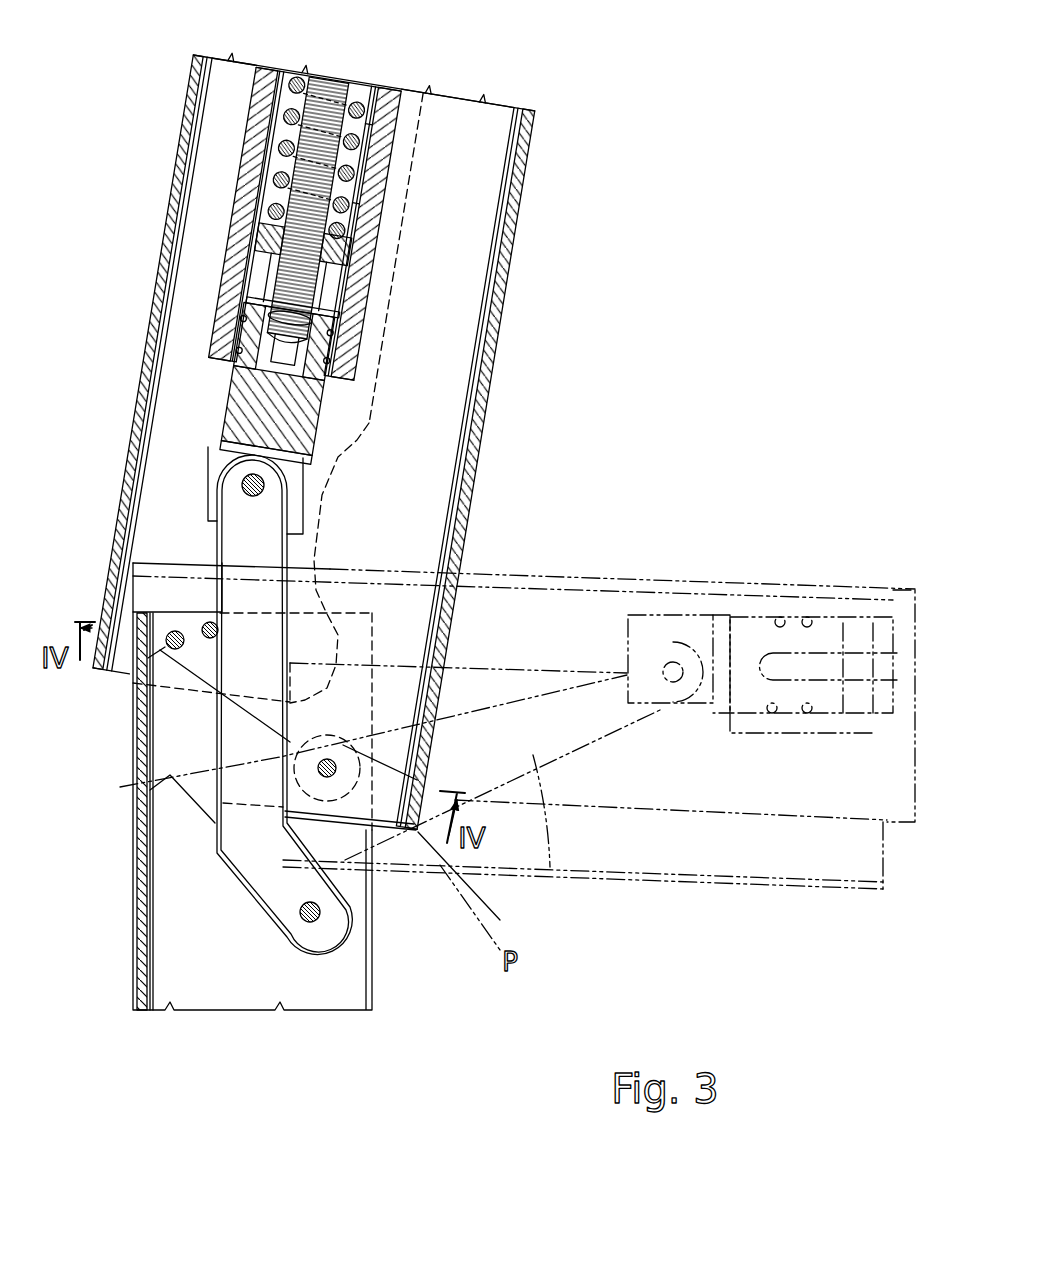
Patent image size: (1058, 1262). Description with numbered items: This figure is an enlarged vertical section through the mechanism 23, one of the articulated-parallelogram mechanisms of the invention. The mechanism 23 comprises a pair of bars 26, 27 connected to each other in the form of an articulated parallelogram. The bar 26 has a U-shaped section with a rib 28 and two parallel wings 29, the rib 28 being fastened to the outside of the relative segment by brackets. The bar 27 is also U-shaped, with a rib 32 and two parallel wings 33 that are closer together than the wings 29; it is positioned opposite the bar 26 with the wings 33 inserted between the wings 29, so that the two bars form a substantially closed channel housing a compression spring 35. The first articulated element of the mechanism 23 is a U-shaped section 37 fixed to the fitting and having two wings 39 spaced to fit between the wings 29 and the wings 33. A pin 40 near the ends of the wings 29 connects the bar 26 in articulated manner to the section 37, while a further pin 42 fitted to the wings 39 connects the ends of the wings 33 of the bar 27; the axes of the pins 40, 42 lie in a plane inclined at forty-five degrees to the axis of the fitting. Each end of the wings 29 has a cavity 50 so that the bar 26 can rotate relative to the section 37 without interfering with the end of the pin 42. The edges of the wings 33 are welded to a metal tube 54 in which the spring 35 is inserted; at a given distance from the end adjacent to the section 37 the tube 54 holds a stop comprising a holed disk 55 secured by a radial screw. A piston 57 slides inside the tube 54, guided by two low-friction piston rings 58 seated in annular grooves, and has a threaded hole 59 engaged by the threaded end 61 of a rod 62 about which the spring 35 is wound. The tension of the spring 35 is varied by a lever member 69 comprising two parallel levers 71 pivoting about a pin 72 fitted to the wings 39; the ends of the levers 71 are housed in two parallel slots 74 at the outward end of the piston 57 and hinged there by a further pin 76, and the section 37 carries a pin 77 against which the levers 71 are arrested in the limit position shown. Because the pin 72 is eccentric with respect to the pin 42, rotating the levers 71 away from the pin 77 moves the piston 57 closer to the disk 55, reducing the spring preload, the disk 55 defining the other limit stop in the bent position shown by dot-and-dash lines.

The mechanism 23 is at (497, 502).
The bar 26 is at (158, 243).
The bar 27 is at (506, 322).
The rib 28 is at (148, 358).
The wings 29 is at (223, 78).
The rib 32 is at (489, 374).
The wings 33 is at (452, 110).
The compression spring 35 is at (277, 155).
The U-shaped section 37 is at (130, 912).
The wings 39 is at (360, 963).
The pin 40 is at (135, 672).
The pin 42 is at (335, 758).
The cavity 50 is at (325, 533).
The metal tube 54 is at (372, 175).
The disk 55 is at (350, 247).
The piston 57 is at (303, 423).
The piston rings 58 is at (333, 362).
The threaded hole 59 is at (345, 385).
The threaded end 61 is at (303, 303).
The rod 62 is at (328, 97).
The lever member 69 is at (245, 857).
The levers 71 is at (213, 823).
The pin 72 is at (307, 923).
The slots 74 is at (230, 453).
The pin 76 is at (265, 487).
The pin 77 is at (210, 620).